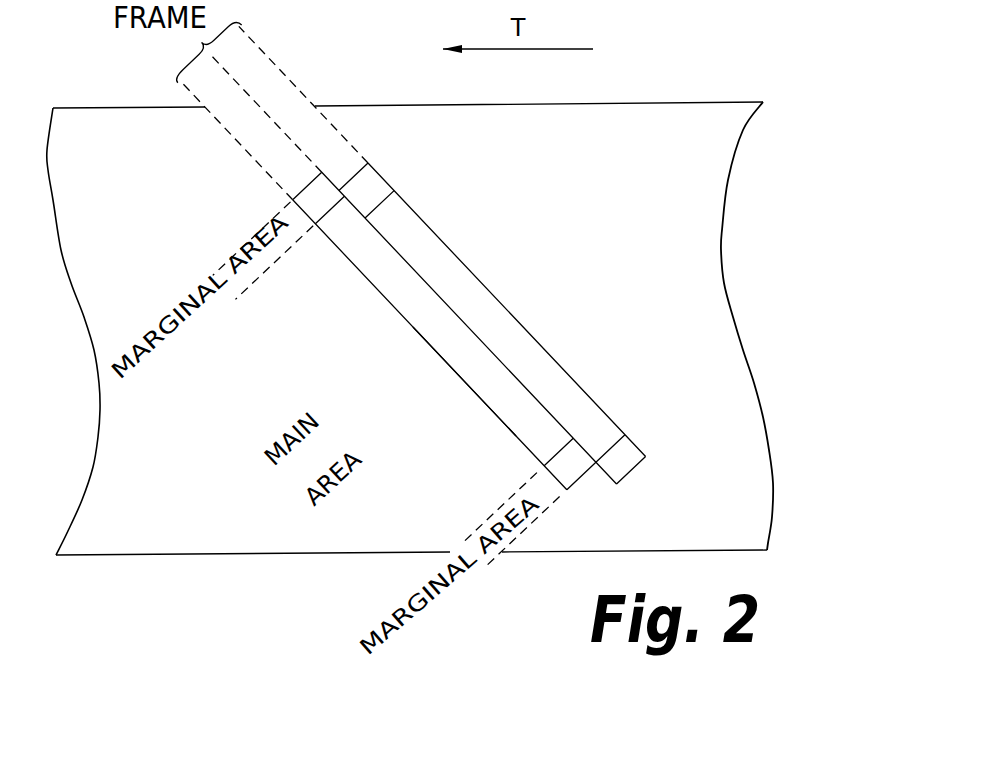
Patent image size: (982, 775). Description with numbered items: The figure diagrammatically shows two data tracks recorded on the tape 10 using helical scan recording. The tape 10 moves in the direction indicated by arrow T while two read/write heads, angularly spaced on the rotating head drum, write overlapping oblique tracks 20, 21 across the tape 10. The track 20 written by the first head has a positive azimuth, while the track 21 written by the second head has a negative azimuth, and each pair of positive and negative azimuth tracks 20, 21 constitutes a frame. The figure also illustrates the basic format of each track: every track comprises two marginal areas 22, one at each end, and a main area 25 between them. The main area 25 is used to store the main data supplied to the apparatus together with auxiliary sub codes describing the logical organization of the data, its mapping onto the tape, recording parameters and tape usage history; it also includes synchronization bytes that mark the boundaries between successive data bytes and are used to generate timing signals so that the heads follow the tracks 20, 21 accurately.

The tape 10 is at (667, 102).
The positive azimuth track 20 is at (433, 288).
The negative azimuth track 21 is at (518, 323).
The marginal area 22 is at (293, 199).
The main area 25 is at (455, 355).